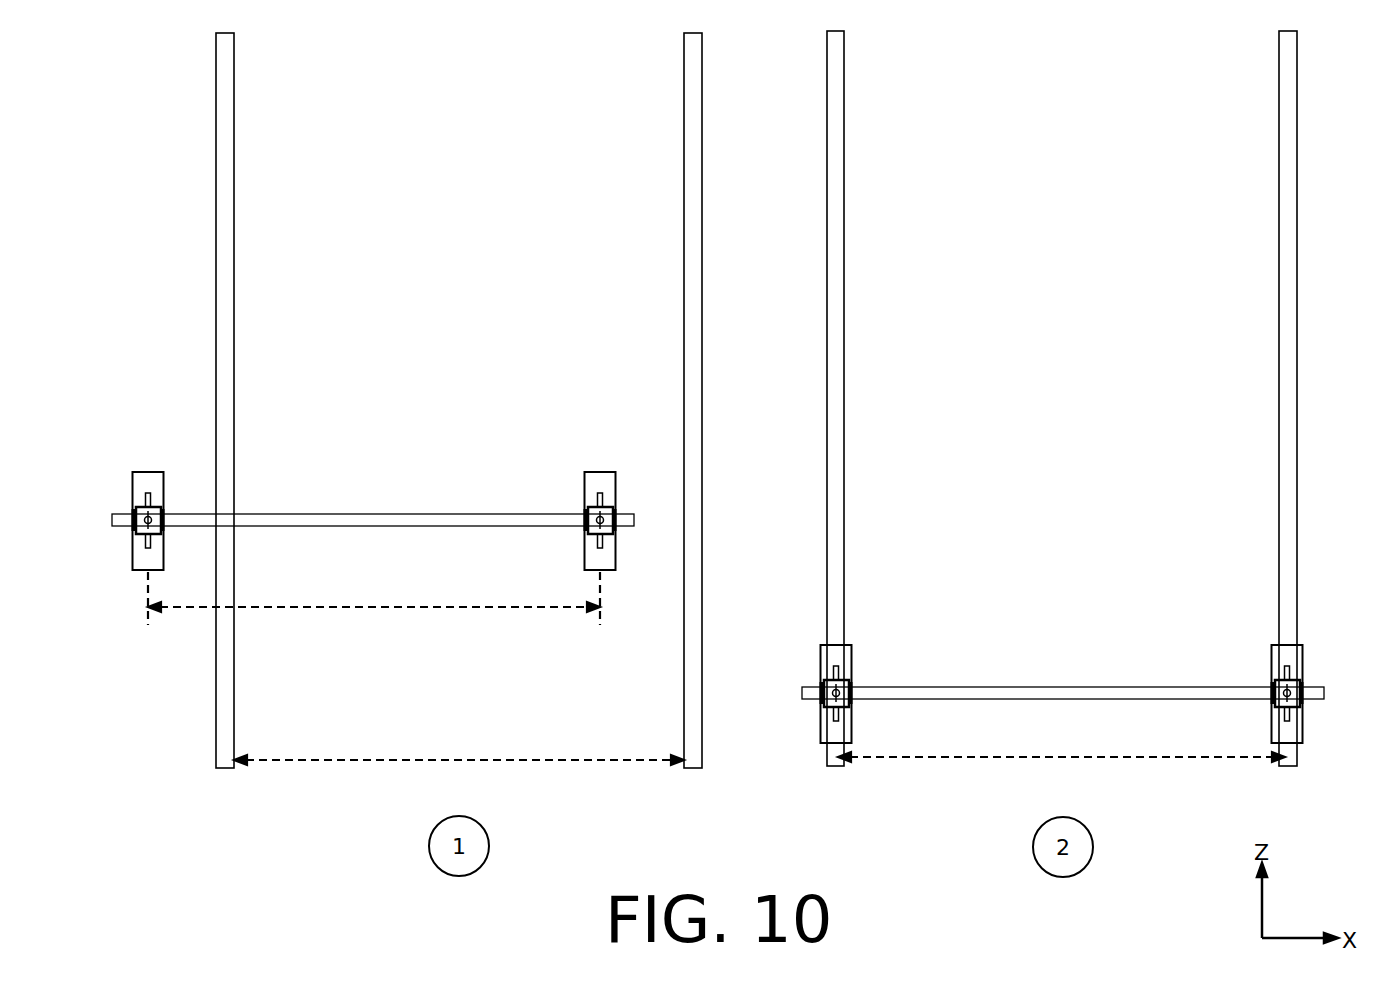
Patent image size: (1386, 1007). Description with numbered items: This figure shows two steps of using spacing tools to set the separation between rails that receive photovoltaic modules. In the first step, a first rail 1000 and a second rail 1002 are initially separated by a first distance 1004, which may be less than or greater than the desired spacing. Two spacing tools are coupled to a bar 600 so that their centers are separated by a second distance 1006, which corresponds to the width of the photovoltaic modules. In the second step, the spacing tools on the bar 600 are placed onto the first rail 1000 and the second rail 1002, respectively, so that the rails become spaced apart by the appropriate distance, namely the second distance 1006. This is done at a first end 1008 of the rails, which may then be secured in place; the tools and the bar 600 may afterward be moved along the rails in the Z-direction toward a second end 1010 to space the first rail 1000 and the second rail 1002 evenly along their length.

The first rail 1000 is at (1288, 138).
The second rail 1002 is at (836, 150).
The bar 600 is at (373, 514).
The second distance 1006 is at (716, 683).
The first distance 1004 is at (459, 744).
The second end 1010 is at (878, 38).
The first end 1008 is at (836, 788).